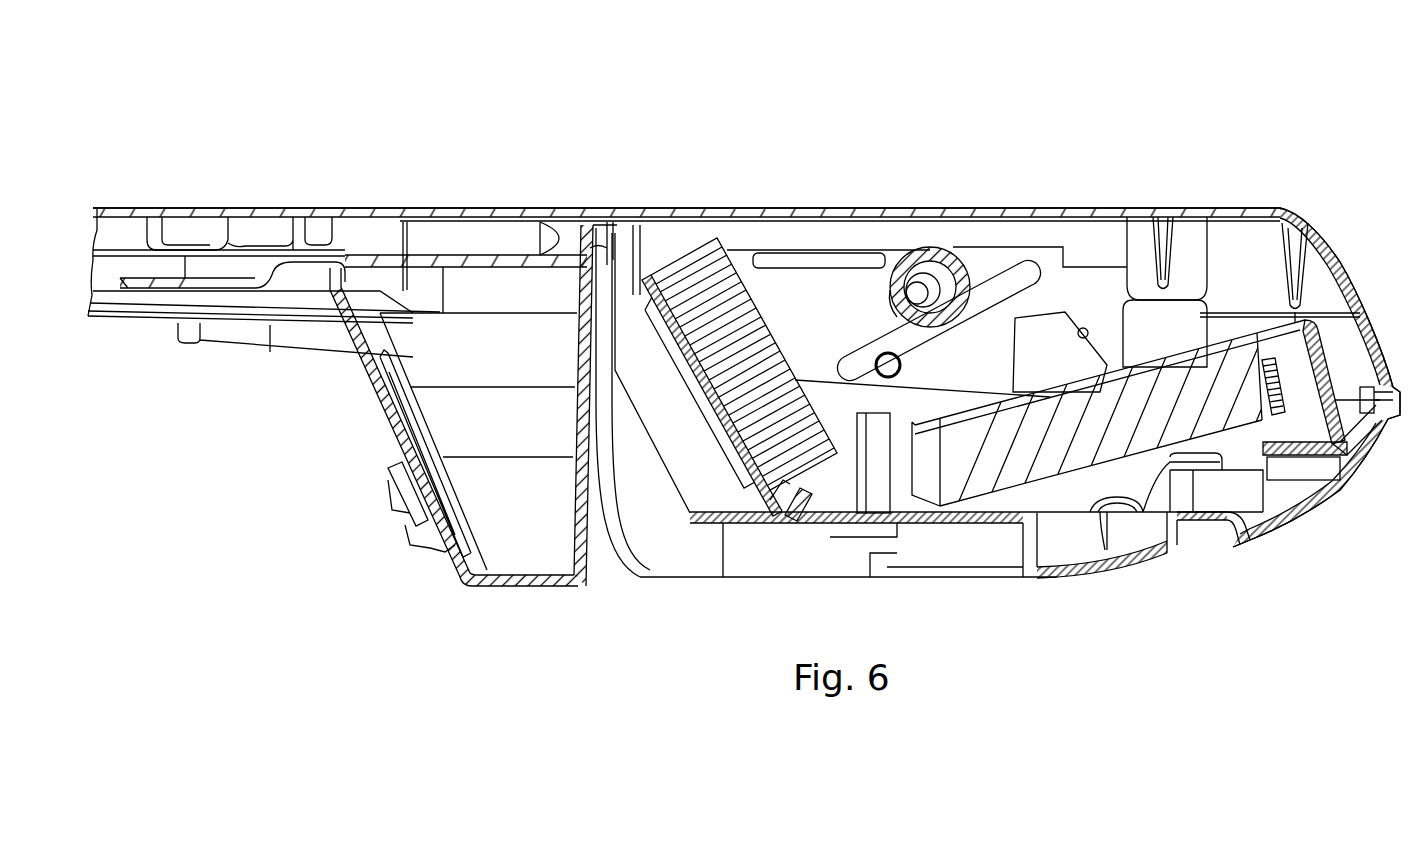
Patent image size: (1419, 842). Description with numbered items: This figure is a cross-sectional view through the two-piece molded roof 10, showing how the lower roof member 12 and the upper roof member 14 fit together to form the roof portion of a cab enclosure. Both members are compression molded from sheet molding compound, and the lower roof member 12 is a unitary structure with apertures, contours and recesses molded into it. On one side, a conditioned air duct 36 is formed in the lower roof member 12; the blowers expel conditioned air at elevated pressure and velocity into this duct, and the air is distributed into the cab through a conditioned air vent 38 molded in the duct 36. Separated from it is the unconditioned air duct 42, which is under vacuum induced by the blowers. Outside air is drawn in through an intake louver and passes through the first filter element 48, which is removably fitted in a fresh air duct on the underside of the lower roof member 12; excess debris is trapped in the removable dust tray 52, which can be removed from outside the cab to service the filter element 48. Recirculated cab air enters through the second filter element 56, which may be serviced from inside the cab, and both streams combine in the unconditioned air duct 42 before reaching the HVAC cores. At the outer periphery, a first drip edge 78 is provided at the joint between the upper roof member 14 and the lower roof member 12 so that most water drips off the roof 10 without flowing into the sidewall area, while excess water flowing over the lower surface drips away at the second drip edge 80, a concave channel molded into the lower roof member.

The two-piece molded roof 10 is at (1224, 104).
The lower roof member 12 is at (1377, 440).
The upper roof member 14 is at (451, 212).
The conditioned air duct 36 is at (523, 557).
The conditioned air vent 38 is at (413, 434).
The unconditioned air duct 42 is at (799, 287).
The first filter element 48 is at (1022, 432).
The dust tray 52 is at (1104, 568).
The second filter element 56 is at (709, 265).
The first drip edge 78 is at (1390, 423).
The second drip edge 80 is at (1220, 537).